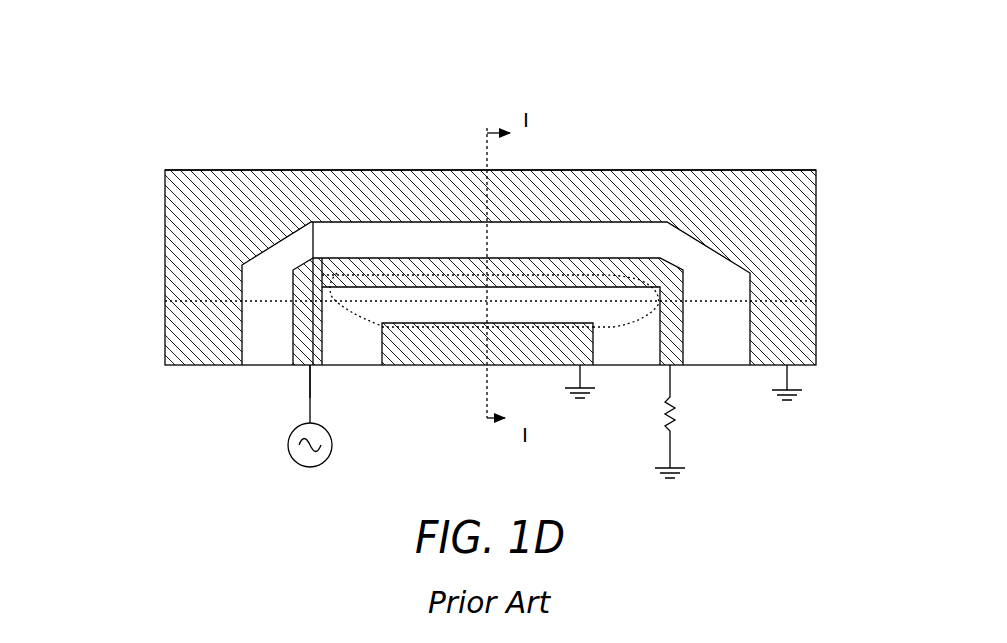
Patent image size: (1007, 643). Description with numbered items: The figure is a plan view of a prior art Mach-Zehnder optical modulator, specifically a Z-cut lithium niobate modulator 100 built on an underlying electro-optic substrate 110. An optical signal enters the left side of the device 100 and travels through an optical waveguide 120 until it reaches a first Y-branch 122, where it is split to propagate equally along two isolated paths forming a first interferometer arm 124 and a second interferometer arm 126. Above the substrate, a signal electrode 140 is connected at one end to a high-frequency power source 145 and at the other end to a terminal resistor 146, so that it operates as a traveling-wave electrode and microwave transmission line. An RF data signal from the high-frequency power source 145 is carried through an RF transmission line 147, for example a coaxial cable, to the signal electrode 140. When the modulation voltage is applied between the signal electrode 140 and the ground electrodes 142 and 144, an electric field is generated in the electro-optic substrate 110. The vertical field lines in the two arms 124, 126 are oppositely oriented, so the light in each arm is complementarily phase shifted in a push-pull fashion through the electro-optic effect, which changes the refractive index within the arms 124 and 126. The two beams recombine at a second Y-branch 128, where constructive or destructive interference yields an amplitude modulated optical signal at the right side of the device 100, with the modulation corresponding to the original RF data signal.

The Z-cut LiNbO3 modulator 100 is at (290, 91).
The electro-optic substrate 110 is at (270, 262).
The optical waveguide 120 is at (222, 287).
The first Y-branch 122 is at (311, 222).
The first interferometer arm 124 is at (613, 327).
The second interferometer arm 126 is at (602, 275).
The second Y-branch 128 is at (656, 288).
The signal electrode 140 is at (310, 338).
The ground electrode 142 is at (487, 344).
The ground electrode 144 is at (786, 370).
The high-frequency power source 145 is at (325, 427).
The terminal resistor 146 is at (673, 415).
The RF transmission line 147 is at (310, 398).